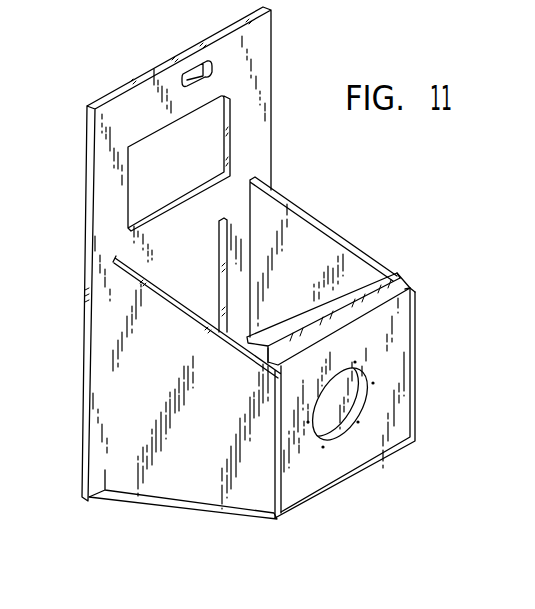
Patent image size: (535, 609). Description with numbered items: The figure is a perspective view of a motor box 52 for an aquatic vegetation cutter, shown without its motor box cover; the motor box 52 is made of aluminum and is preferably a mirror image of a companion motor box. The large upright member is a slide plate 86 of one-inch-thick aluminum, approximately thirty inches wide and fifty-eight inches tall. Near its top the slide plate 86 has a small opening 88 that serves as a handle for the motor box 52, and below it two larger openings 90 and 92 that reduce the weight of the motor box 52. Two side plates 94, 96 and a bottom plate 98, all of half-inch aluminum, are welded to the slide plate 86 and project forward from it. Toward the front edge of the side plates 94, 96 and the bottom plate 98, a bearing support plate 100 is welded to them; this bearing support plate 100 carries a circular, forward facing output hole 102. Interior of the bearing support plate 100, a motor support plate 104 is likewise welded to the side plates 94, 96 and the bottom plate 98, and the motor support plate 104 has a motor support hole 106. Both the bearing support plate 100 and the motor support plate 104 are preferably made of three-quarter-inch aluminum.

The motor box 52 is at (101, 79).
The slide plate 86 is at (263, 37).
The small opening 88 is at (196, 76).
The large opening 90 is at (200, 146).
The large opening 92 is at (188, 265).
The side plate 94 is at (132, 392).
The side plate 96 is at (296, 230).
The bottom plate 98 is at (358, 473).
The bearing support plate 100 is at (408, 295).
The output hole 102 is at (355, 382).
The motor support plate 104 is at (347, 282).
The motor support hole 106 is at (330, 393).